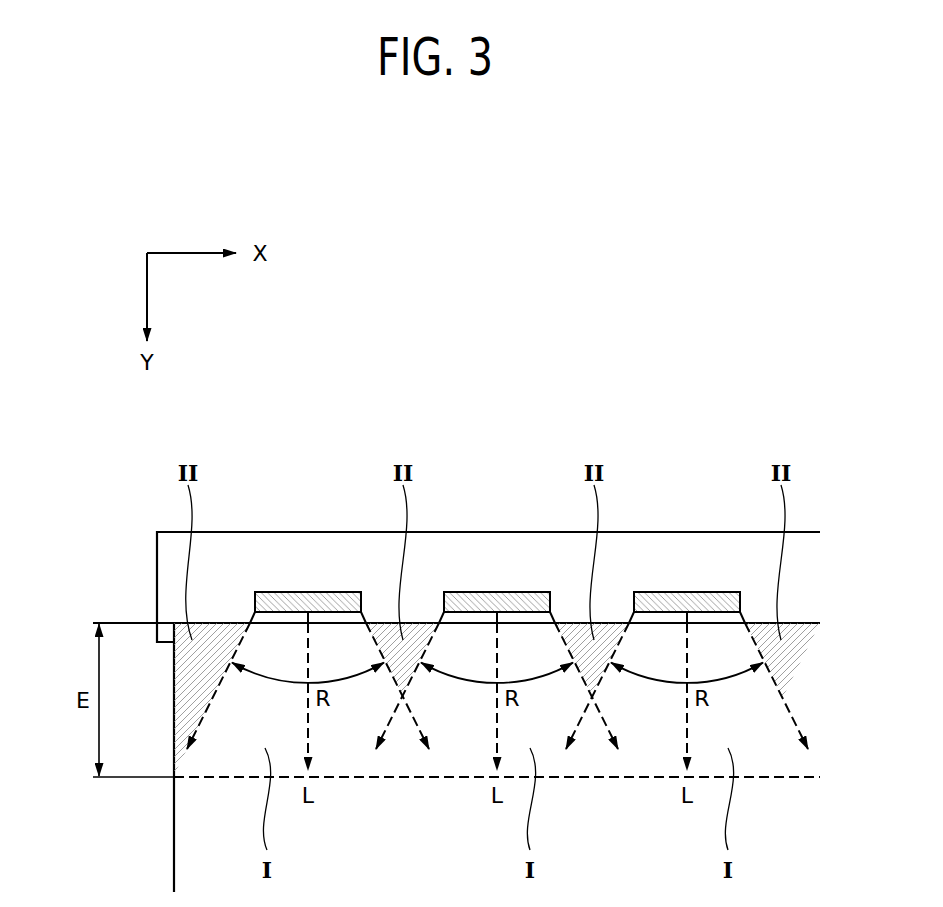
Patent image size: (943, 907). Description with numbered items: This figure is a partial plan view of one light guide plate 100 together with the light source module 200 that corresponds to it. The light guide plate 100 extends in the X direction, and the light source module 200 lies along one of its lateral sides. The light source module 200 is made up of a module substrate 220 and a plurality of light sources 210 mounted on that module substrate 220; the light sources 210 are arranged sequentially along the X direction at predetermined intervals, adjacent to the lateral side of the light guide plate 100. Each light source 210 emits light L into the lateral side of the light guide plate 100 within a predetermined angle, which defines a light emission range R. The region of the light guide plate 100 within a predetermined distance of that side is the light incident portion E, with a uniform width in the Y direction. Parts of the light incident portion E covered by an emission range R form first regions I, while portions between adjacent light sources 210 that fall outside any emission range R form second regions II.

The light guide plate 100 is at (174, 857).
The light source module 200 is at (140, 561).
The light source 210 is at (330, 597).
The module substrate 220 is at (258, 540).